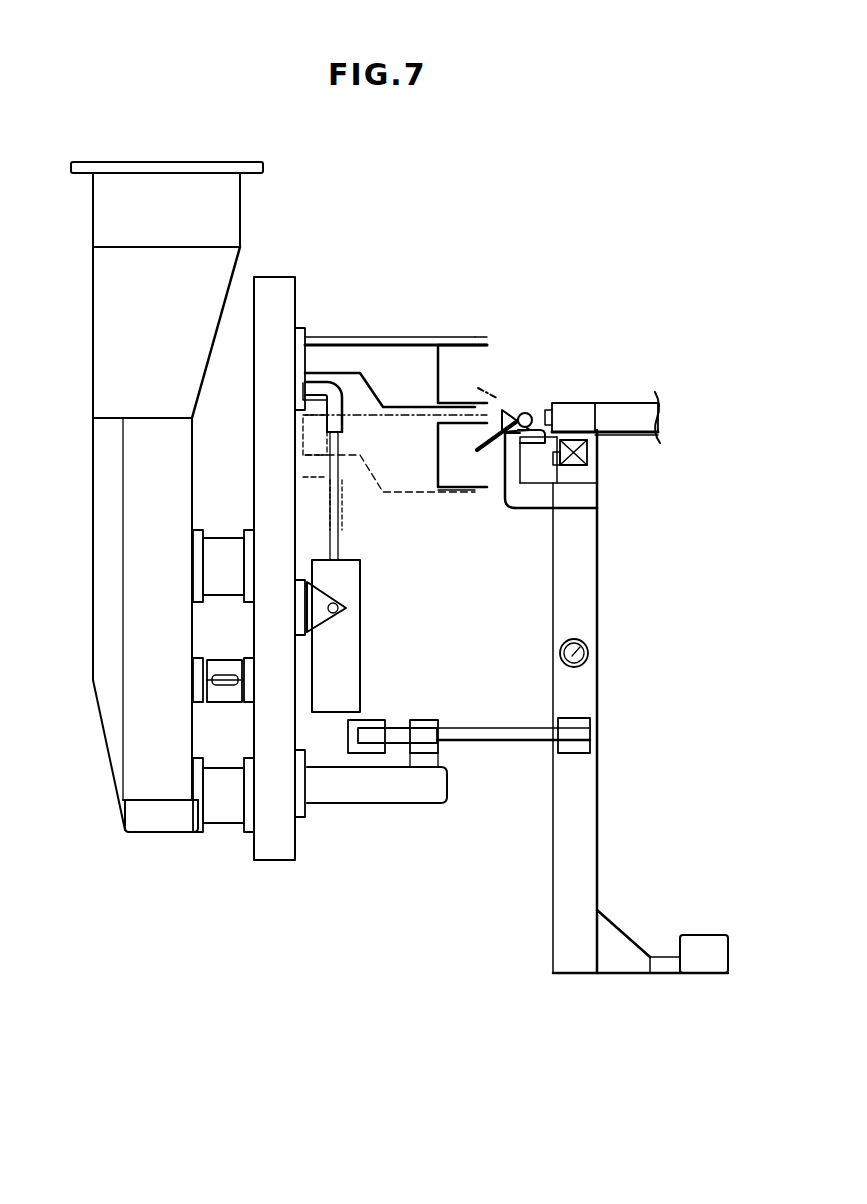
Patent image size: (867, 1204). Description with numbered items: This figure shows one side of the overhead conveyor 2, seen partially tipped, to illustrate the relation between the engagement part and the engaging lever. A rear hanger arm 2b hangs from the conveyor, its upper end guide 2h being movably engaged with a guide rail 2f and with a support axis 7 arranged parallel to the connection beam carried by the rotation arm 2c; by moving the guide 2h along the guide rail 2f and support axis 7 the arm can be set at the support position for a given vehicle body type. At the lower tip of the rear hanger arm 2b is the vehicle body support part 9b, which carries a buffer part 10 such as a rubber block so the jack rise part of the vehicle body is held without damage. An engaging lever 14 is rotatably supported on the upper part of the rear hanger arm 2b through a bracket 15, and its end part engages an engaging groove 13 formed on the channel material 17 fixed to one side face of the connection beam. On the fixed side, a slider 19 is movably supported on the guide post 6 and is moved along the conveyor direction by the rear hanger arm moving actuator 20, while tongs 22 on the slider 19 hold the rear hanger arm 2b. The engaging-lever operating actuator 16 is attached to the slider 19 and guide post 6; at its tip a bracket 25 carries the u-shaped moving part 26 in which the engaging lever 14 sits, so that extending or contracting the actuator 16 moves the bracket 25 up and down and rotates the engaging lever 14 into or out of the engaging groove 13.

The overhead conveyor 2 is at (629, 440).
The rear hanger arm 2b is at (580, 588).
The rotation arm 2c is at (585, 420).
The guide rail 2f is at (588, 448).
The guide 2h is at (582, 472).
The guide post 6 is at (112, 338).
The support axis 7 is at (588, 650).
The vehicle body support part 9b is at (623, 982).
The buffer part 10 is at (703, 947).
The engaging groove 13 is at (547, 407).
The engaging lever 14 is at (493, 430).
The bracket 15 is at (513, 493).
The engaging-lever operating actuator 16 is at (347, 648).
The channel material 17 is at (560, 420).
The slider 19 is at (277, 843).
The rear hanger arm moving actuator 20 is at (223, 665).
The tongs 22 is at (500, 726).
The bracket 25 is at (398, 353).
The moving part 26 is at (452, 338).